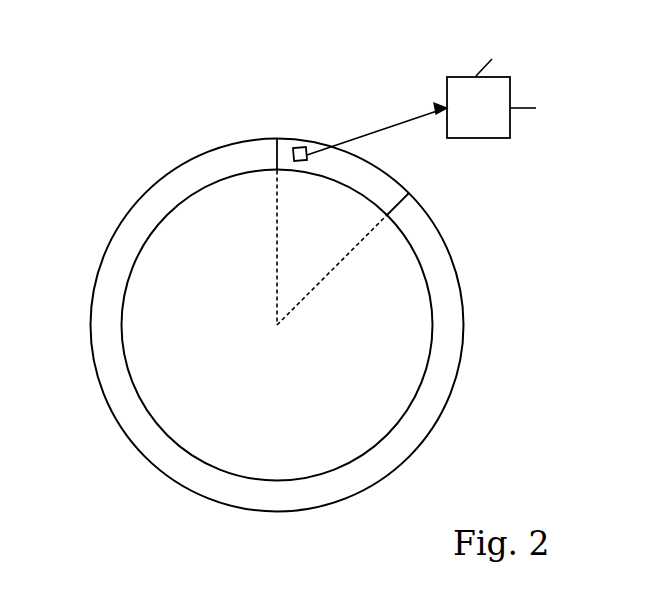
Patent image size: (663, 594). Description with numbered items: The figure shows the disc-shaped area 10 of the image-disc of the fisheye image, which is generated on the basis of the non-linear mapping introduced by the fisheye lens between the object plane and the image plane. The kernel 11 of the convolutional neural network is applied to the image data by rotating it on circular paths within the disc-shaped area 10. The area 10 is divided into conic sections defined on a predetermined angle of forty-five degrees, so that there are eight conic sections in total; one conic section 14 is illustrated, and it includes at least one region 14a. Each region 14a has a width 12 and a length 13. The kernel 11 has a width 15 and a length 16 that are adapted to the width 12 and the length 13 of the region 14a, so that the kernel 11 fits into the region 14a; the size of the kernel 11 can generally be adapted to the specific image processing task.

The disc-shaped area 10 is at (144, 99).
The kernel 11 is at (298, 147).
The width 12 is at (275, 158).
The length 13 is at (328, 186).
The conic section 14 is at (309, 144).
The region 14a is at (382, 185).
The width 15 is at (495, 58).
The length 16 is at (535, 108).